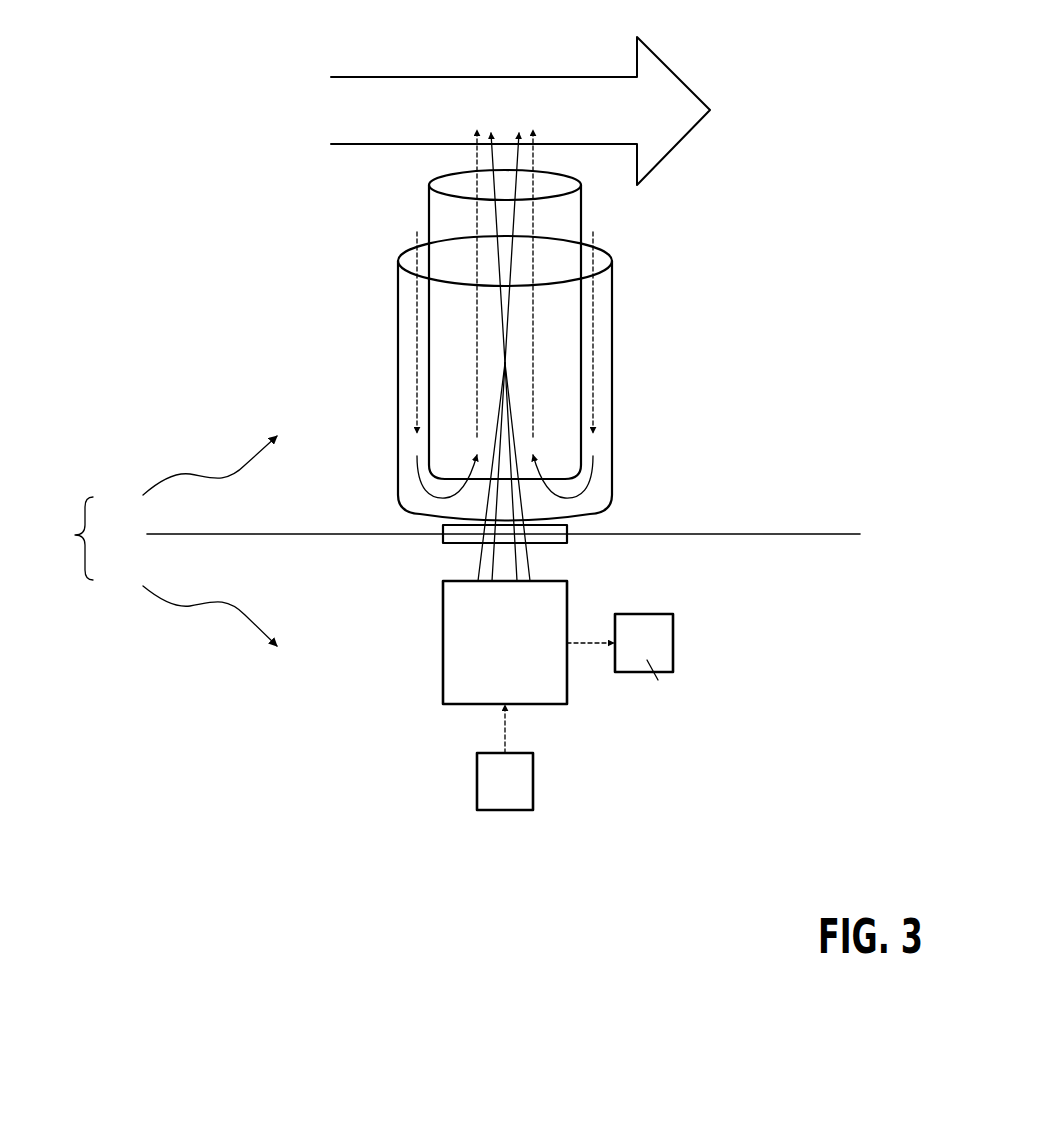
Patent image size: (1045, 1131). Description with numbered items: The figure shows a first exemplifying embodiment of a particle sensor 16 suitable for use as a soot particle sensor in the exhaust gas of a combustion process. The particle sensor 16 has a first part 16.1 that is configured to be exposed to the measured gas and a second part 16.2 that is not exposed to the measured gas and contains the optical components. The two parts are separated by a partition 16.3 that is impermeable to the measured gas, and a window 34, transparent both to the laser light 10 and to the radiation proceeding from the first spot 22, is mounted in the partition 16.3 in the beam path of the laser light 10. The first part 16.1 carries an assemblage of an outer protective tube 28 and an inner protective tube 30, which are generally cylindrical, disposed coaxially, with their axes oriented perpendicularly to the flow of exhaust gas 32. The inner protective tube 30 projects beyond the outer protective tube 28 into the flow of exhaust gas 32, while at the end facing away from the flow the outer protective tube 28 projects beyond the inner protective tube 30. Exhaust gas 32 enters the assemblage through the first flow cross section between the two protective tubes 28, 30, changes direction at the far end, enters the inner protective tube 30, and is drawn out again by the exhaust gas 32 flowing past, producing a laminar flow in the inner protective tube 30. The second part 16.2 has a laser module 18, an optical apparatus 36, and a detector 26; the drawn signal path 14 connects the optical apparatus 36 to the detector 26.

The laser light 10 is at (507, 735).
The detector signal 14 is at (590, 638).
The particle sensor 16 is at (72, 540).
The first part 16.1 is at (186, 485).
The second part 16.2 is at (186, 597).
The partition 16.3 is at (776, 527).
The laser module 18 is at (534, 780).
The first spot 22 is at (514, 357).
The detector 26 is at (674, 643).
The outer protective tube 28 is at (613, 286).
The inner protective tube 30 is at (583, 213).
The exhaust gas 32 is at (489, 76).
The window 34 is at (562, 533).
The optical apparatus 36 is at (394, 694).